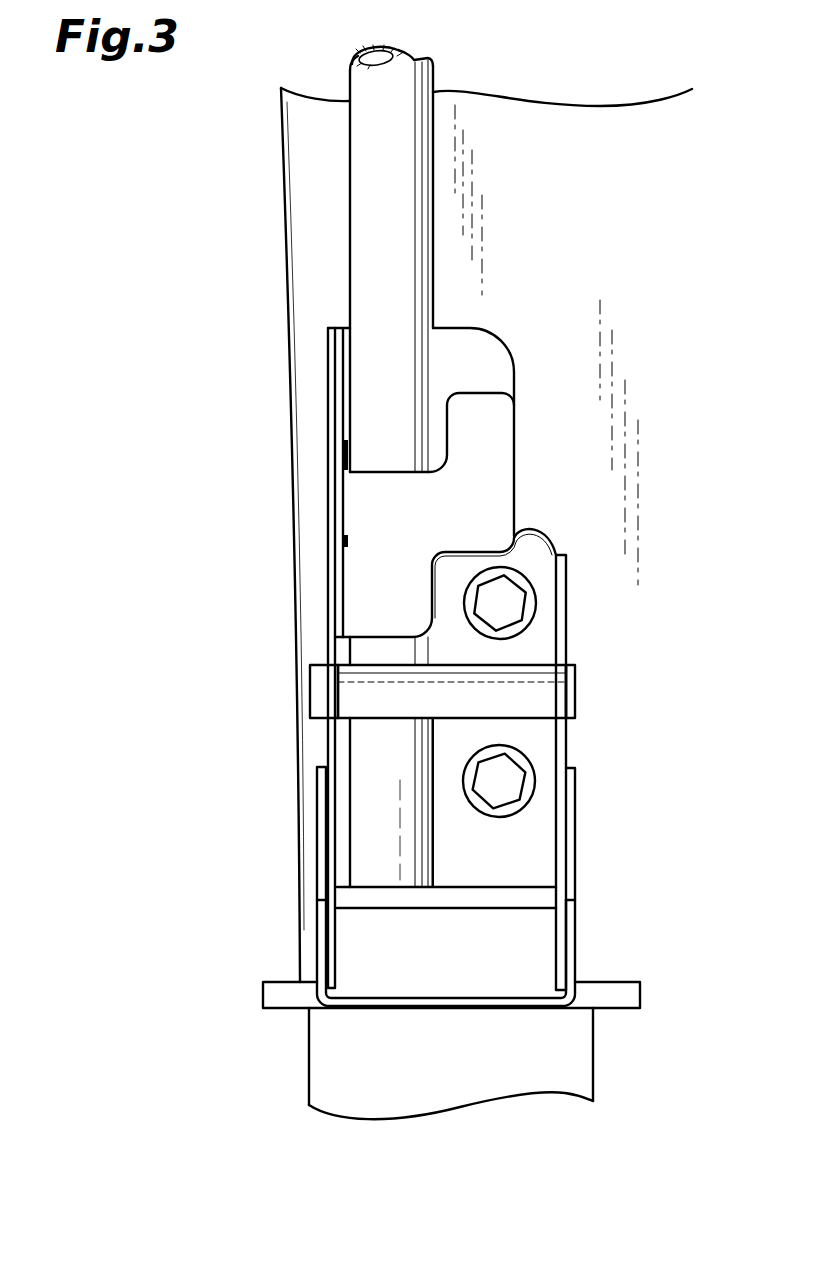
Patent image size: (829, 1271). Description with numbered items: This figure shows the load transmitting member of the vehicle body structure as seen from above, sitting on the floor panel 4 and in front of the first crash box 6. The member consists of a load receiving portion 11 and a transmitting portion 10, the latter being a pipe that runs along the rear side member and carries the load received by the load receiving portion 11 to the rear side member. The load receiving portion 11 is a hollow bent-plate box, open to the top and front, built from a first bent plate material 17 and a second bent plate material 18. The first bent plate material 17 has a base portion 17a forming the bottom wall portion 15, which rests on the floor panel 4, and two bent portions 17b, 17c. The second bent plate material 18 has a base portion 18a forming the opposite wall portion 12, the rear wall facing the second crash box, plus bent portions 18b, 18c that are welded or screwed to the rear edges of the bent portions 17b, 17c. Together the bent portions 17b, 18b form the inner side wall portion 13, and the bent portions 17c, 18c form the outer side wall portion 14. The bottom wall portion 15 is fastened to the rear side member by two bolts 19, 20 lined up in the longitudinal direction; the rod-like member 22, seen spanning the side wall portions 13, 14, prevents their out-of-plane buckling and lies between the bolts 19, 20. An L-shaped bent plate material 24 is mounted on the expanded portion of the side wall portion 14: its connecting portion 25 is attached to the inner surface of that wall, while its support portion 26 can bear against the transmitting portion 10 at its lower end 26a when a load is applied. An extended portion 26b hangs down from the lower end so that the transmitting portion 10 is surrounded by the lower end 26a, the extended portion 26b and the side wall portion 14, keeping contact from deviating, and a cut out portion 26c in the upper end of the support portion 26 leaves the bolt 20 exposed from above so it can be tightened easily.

The floor panel 4 is at (330, 210).
The transmitting portion 10 is at (349, 160).
The bent plate material 24 is at (403, 473).
The connecting portion 25 is at (352, 572).
The support portion 26 is at (431, 473).
The lower end 26a is at (385, 472).
The extended portion 26b is at (480, 410).
The cut out portion 26c is at (440, 603).
The bolt 20 is at (492, 597).
The load receiving portion 11 is at (403, 743).
The first bent plate material 17 is at (421, 712).
The base portion 17a is at (532, 867).
The bottom wall portion 15 is at (451, 873).
The bent portion 17b is at (568, 746).
The bent portion 17c is at (329, 745).
The second bent plate material 18 is at (403, 963).
The base portion 18a is at (446, 1029).
The opposite wall portion 12 is at (453, 1008).
The bent portion 18b is at (580, 950).
The bent portion 18c is at (317, 947).
The side wall portion 14 is at (229, 730).
The side wall portion 13 is at (689, 705).
The rod-like member 22 is at (530, 695).
The bolt 19 is at (508, 780).
The first crash box 6 is at (345, 1064).